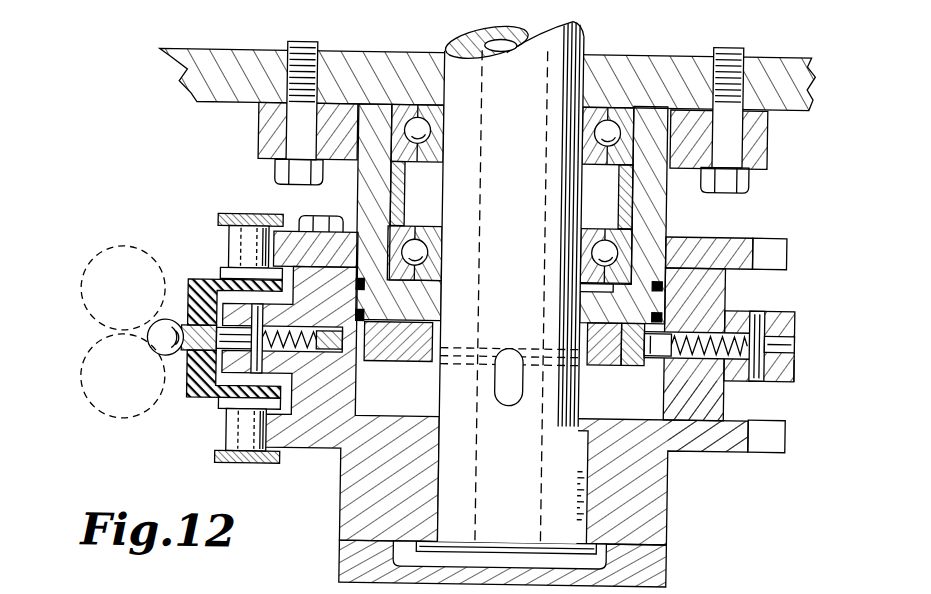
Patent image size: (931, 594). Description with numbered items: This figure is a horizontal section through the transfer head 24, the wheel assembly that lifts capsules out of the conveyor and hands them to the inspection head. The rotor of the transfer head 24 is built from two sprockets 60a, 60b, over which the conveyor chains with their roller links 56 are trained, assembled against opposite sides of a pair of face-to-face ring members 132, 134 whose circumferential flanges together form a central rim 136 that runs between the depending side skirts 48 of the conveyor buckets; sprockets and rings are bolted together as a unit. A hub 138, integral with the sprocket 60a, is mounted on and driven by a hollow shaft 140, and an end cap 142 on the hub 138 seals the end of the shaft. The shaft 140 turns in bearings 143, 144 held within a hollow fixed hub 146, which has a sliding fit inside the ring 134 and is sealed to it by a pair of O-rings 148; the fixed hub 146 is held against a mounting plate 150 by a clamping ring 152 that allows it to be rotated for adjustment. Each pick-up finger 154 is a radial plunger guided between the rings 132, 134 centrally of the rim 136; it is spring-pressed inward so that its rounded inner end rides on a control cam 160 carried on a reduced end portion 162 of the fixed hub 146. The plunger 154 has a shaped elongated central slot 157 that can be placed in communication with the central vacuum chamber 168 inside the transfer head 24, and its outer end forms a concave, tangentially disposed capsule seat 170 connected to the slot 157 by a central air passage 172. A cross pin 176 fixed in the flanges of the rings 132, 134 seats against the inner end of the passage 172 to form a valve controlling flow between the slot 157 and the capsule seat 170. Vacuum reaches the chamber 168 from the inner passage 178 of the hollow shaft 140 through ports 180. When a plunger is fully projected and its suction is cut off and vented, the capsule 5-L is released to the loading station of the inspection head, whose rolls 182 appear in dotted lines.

The transfer head 24 is at (326, 503).
The depending side skirts 48 is at (216, 283).
The roller links 56 is at (230, 246).
The capsule 5-L is at (152, 329).
The rolls 182 is at (118, 324).
The sprocket 60a is at (772, 443).
The sprocket 60b is at (781, 247).
The ring member 132 is at (724, 399).
The ring member 134 is at (722, 287).
The central circumferential rim 136 is at (794, 312).
The hub 138 is at (650, 497).
The hollow shaft 140 is at (530, 185).
The end cap 142 is at (668, 566).
The bearing 143 is at (630, 108).
The bearing 144 is at (628, 235).
The hollow fixed hub 146 is at (665, 188).
The O-rings 148 is at (613, 307).
The mounting plate 150 is at (806, 88).
The clamping ring 152 is at (766, 140).
The pick-up finger 154 is at (797, 368).
The central slot 157 is at (722, 388).
The control cam 160 is at (403, 362).
The reduced end portion 162 is at (588, 364).
The central vacuum chamber 168 is at (653, 408).
The capsule seat 170 is at (782, 351).
The central air passage 172 is at (797, 338).
The cross pin 176 is at (759, 377).
The inner passage 178 is at (500, 51).
The ports 180 is at (517, 406).